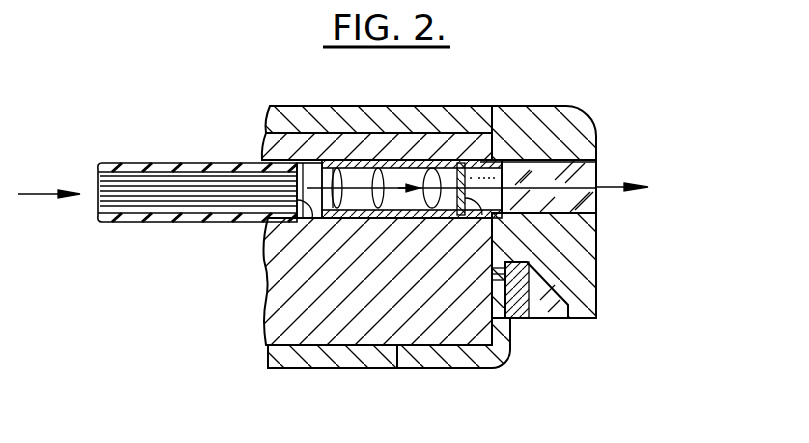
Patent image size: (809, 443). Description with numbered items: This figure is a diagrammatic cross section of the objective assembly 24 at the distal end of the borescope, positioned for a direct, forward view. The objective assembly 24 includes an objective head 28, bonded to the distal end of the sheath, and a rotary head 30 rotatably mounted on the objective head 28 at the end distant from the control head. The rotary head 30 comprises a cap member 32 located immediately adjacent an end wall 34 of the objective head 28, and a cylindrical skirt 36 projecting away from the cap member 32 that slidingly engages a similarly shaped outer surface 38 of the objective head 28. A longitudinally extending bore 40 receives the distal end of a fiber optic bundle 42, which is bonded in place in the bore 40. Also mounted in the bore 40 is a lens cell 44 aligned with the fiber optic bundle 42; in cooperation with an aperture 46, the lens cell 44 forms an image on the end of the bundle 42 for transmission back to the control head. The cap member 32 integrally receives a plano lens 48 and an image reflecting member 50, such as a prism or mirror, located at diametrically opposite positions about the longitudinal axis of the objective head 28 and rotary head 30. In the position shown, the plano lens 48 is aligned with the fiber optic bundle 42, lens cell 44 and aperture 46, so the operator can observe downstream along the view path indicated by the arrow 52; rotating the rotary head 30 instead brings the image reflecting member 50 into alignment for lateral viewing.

The objective assembly 24 is at (595, 84).
The objective head 28 is at (293, 281).
The rotary head 30 is at (604, 124).
The cap member 32 is at (575, 255).
The end wall 34 is at (490, 138).
The cylindrical skirt 36 is at (323, 370).
The outer surface 38 is at (398, 370).
The longitudinally extending bore 40 is at (262, 220).
The fiber optic bundle 42 is at (133, 183).
The lens cell 44 is at (408, 150).
The aperture 46 is at (463, 218).
The plano lens 48 is at (583, 170).
The image reflecting member 50 is at (528, 305).
The arrow 52 is at (606, 190).